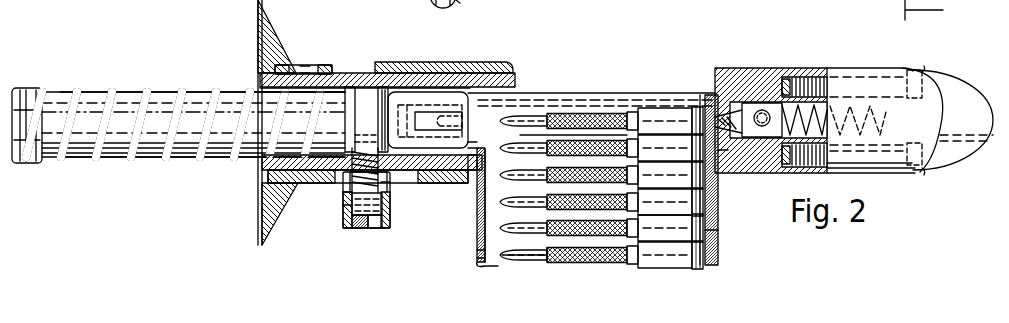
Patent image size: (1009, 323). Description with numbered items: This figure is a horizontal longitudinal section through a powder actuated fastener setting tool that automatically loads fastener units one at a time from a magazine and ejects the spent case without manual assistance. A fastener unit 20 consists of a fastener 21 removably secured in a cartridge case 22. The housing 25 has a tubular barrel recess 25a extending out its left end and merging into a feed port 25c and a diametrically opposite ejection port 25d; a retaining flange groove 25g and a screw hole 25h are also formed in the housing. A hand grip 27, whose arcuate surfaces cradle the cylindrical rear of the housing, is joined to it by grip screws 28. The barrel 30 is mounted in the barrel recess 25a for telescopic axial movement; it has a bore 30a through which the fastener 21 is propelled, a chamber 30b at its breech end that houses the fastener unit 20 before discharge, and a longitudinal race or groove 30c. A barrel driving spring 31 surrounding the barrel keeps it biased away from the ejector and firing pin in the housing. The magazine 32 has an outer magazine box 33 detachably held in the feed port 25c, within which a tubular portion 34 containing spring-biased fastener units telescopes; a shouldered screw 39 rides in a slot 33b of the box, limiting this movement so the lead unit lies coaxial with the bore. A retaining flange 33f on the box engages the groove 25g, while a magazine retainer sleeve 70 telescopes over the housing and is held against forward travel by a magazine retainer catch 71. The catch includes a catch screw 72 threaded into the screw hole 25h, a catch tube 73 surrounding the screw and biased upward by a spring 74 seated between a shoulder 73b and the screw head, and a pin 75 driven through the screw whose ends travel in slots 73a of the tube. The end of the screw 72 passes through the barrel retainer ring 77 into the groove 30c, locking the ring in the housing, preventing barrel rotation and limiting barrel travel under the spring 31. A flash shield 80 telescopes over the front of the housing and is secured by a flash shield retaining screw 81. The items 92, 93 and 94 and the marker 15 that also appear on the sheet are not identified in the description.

The section line 15 is at (938, 12).
The powder actuated fastener unit 20 is at (600, 115).
The fastener 21 is at (530, 242).
The cartridge case 22 is at (712, 262).
The housing 25 is at (770, 68).
The tubular barrel recess 25a is at (385, 95).
The feed port 25c is at (480, 172).
The ejection port 25d is at (515, 80).
The retaining flange groove 25g is at (738, 165).
The screw hole 25h is at (386, 150).
The hand grip 27 is at (850, 68).
The grip screws 28 is at (925, 72).
The barrel 30 is at (105, 148).
The bore 30a is at (135, 110).
The chamber 30b is at (440, 100).
The race or groove 30c is at (166, 150).
The barrel driving spring 31 is at (160, 150).
The magazine 32 is at (728, 243).
The outer magazine box 33 is at (477, 230).
The slot 33b is at (555, 238).
The retaining flange 33f is at (720, 165).
The tubular portion 34 is at (478, 262).
The shouldered screw 39 is at (479, 250).
The magazine retainer sleeve 70 is at (436, 170).
The magazine retainer catch 71 is at (404, 222).
The magazine retainer catch screw 72 is at (370, 230).
The magazine retainer catch tube 73 is at (345, 222).
The slots 73a is at (348, 205).
The spring engaging shoulder 73b is at (380, 180).
The spring 74 is at (345, 176).
The pin 75 is at (345, 195).
The barrel retainer ring 77 is at (360, 95).
The flash shield 80 is at (258, 200).
The flash shield retaining screw 81 is at (320, 66).
The sight base 92 is at (362, 0).
The sight arm 93 is at (462, 0).
The sight pivot 94 is at (442, 3).